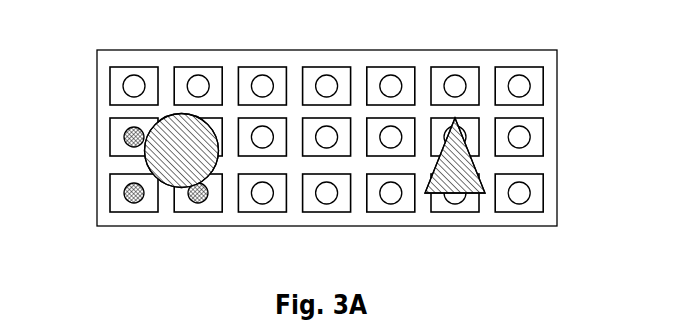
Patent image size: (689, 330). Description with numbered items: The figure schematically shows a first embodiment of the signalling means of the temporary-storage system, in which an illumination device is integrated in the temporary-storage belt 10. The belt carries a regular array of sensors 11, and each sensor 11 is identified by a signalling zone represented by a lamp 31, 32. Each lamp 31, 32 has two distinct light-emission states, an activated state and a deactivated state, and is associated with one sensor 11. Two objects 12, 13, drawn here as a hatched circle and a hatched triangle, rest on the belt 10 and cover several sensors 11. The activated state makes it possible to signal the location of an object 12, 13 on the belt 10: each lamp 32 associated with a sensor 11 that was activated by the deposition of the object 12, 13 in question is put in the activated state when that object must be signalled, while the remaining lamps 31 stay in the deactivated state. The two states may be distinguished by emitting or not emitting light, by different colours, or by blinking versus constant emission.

The temporary-storage belt 10 is at (146, 50).
The sensor 11 is at (117, 75).
The object 12 is at (146, 163).
The object 13 is at (465, 173).
The lamp 31 is at (452, 78).
The lamp 32 is at (123, 138).